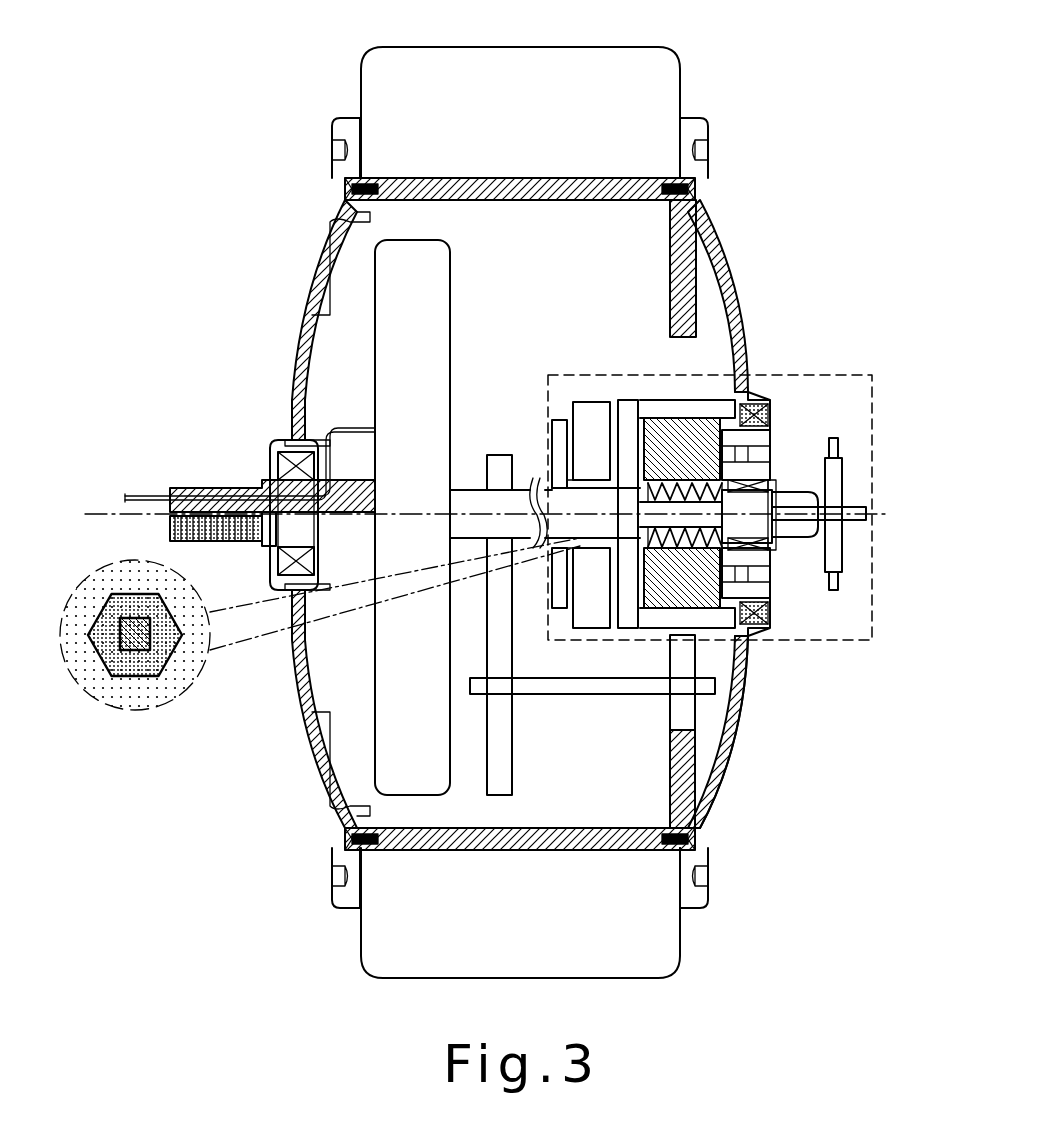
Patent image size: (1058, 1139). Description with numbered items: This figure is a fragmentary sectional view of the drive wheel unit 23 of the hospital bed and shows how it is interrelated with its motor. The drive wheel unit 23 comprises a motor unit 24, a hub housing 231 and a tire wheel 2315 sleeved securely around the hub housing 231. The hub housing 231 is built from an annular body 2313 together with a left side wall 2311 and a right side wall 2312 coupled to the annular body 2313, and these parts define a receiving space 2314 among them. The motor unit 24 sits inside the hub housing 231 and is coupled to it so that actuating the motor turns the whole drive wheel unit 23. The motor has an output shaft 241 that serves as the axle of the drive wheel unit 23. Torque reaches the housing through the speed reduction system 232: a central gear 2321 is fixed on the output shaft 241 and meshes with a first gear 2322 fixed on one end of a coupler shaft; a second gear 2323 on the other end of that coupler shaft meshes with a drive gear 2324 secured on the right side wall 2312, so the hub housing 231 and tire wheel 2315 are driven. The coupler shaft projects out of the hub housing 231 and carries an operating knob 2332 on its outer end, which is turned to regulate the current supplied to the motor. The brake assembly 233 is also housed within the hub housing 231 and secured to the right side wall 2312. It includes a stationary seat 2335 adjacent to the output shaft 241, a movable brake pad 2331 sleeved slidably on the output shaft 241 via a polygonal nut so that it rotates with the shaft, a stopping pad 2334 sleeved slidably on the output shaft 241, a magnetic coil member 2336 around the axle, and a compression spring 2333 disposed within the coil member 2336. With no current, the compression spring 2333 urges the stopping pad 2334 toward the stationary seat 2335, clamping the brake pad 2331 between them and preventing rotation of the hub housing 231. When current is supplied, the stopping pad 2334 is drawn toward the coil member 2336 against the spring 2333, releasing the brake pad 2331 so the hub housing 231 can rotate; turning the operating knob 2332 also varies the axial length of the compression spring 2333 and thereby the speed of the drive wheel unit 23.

The drive wheel unit 23 is at (832, 60).
The hub housing 231 is at (722, 166).
The left side wall 2311 is at (300, 380).
The right side wall 2312 is at (715, 238).
The annular body 2313 is at (500, 188).
The receiving space 2314 is at (558, 251).
The tire wheel 2315 is at (558, 89).
The motor unit 24 is at (424, 289).
The output shaft 241 is at (476, 500).
The speed reduction system 232 is at (535, 704).
The central gear 2321 is at (560, 540).
The first gear 2322 is at (503, 775).
The second gear 2323 is at (700, 715).
The drive gear 2324 is at (700, 780).
The brake assembly 233 is at (814, 370).
The movable brake pad 2331 is at (590, 420).
The operating knob 2332 is at (835, 480).
The compression spring 2333 is at (775, 548).
The stopping pad 2334 is at (630, 420).
The stationary seat 2335 is at (556, 445).
The magnetic coil member 2336 is at (765, 636).